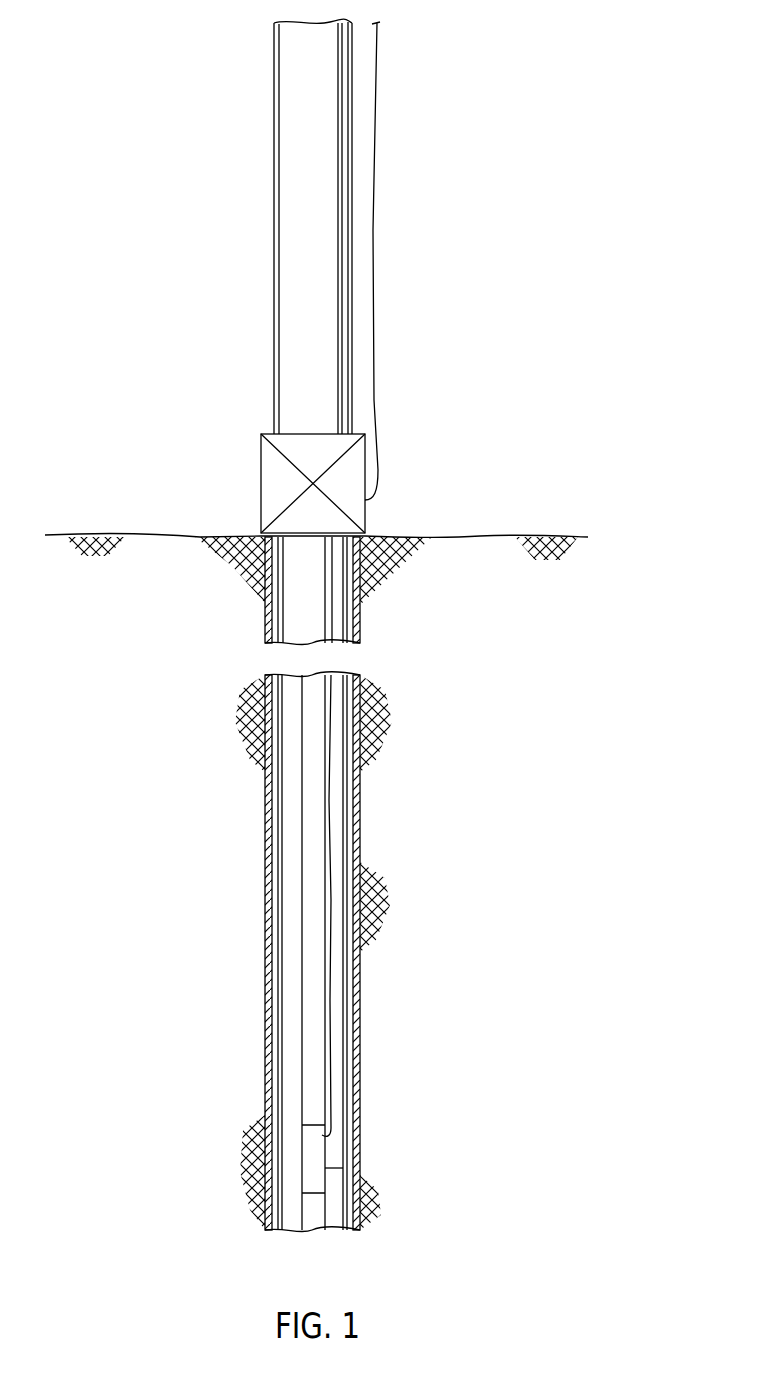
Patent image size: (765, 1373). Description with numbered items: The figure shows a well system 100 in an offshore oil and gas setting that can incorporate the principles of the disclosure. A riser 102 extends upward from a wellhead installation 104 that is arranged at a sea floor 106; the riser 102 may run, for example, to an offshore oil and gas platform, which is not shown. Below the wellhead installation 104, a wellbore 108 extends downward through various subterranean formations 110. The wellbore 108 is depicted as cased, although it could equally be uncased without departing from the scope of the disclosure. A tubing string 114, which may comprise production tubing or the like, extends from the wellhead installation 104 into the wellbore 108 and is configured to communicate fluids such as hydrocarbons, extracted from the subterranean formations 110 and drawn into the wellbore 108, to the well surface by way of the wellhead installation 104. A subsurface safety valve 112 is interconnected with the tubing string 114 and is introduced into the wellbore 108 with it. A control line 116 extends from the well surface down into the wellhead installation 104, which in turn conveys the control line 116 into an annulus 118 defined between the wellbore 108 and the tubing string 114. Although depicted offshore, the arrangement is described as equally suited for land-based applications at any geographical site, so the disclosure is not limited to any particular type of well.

The well system 100 is at (577, 362).
The riser 102 is at (274, 240).
The wellhead installation 104 is at (261, 487).
The sea floor 106 is at (462, 536).
The wellbore 108 is at (265, 608).
The subterranean formations 110 is at (464, 758).
The subsurface safety valve 112 is at (325, 1168).
The tubing string 114 is at (302, 827).
The control line 116 is at (377, 127).
The annulus 118 is at (292, 1015).